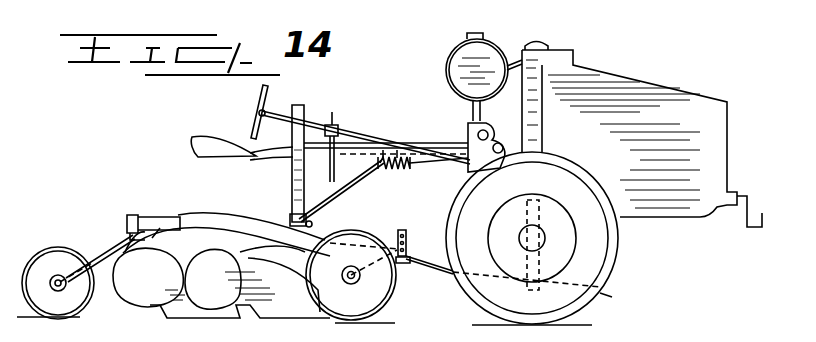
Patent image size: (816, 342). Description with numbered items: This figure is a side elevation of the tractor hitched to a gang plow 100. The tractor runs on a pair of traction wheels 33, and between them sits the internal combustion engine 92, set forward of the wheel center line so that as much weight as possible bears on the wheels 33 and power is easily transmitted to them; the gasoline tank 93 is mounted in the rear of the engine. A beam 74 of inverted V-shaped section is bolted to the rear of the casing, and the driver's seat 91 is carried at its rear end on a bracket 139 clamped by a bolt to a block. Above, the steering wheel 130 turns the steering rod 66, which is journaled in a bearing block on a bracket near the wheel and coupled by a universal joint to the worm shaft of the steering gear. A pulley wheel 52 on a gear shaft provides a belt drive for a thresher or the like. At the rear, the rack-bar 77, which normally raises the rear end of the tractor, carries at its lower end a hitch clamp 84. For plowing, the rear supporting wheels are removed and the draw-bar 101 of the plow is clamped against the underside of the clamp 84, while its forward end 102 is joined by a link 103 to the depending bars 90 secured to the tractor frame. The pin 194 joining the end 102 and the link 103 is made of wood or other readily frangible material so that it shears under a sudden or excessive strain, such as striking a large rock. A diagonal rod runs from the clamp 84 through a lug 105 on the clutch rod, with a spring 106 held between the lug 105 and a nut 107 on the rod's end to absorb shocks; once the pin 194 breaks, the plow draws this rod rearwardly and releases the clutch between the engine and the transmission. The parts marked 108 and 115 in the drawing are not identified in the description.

The steering wheel 130 is at (262, 88).
The driver's seat 91 is at (203, 143).
The bracket 139 is at (258, 154).
The hitch clamp 84 is at (290, 218).
The gang plow 100 is at (207, 272).
The draw-bar 101 is at (280, 279).
The rack-bar 77 is at (305, 113).
The steering rod 66 is at (347, 134).
The lug 105 is at (383, 158).
The sleeve 115 is at (397, 152).
The beam 74 is at (437, 150).
The gasoline tank 93 is at (467, 53).
The pulley wheel 52 is at (492, 137).
The internal combustion engine 92 is at (652, 112).
The spring 106 is at (398, 168).
The nut 107 is at (412, 167).
The link 108 is at (337, 193).
The forward end of the draw-bar 102 is at (403, 231).
The link 103 is at (447, 274).
The pin 194 is at (401, 264).
The brackets 90 is at (620, 275).
The traction wheels 33 is at (617, 301).